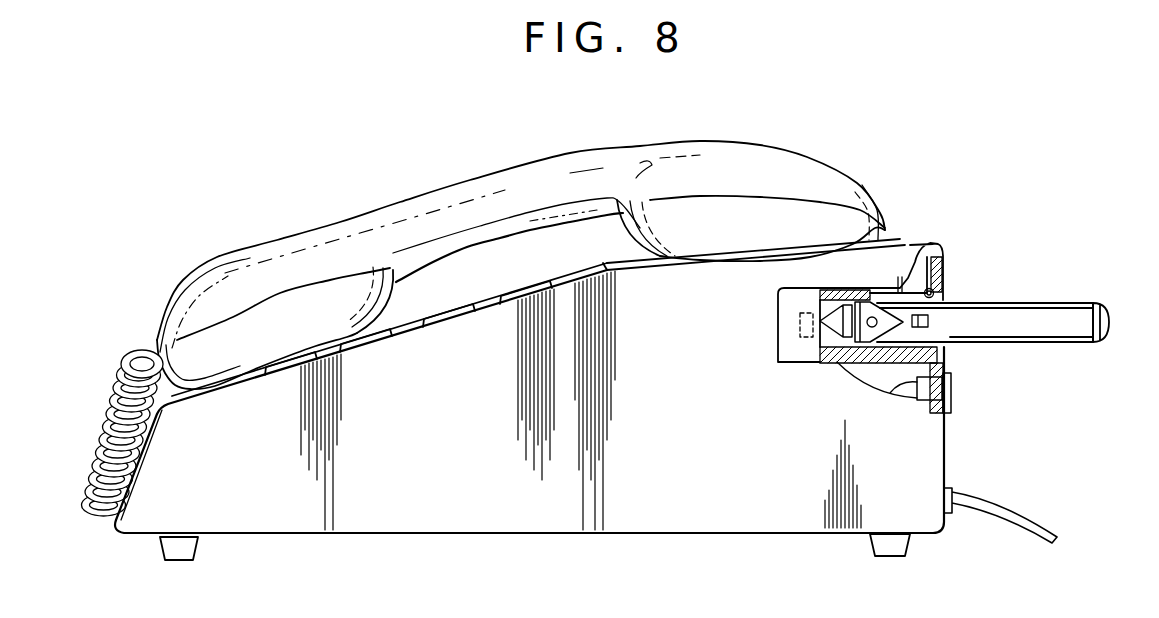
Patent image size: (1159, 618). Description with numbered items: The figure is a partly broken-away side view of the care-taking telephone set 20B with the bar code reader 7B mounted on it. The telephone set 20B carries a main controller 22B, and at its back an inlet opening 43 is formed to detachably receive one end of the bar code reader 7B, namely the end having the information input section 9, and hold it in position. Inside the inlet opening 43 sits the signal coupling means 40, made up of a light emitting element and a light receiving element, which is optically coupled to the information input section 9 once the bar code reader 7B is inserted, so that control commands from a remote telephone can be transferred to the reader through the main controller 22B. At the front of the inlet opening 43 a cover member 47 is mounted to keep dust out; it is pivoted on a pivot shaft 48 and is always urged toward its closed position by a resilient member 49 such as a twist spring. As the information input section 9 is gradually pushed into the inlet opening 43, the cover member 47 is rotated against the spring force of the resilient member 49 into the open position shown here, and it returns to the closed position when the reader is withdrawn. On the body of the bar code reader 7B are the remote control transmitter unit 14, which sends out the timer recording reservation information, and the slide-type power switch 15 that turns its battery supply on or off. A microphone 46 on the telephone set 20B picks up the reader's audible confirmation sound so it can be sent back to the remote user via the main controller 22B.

The care-taking telephone set 20B is at (592, 507).
The main controller 22B is at (778, 335).
The signal coupling means 40 is at (806, 338).
The information input section 9 is at (828, 330).
The cover member 47 is at (899, 290).
The resilient member 49 is at (938, 255).
The pivot shaft 48 is at (934, 291).
The bar code reader 7B is at (1023, 303).
The remote control transmitter unit 14 is at (1110, 305).
The slide-type power switch 15 is at (933, 328).
The inlet opening 43 is at (947, 352).
The microphone 46 is at (953, 392).